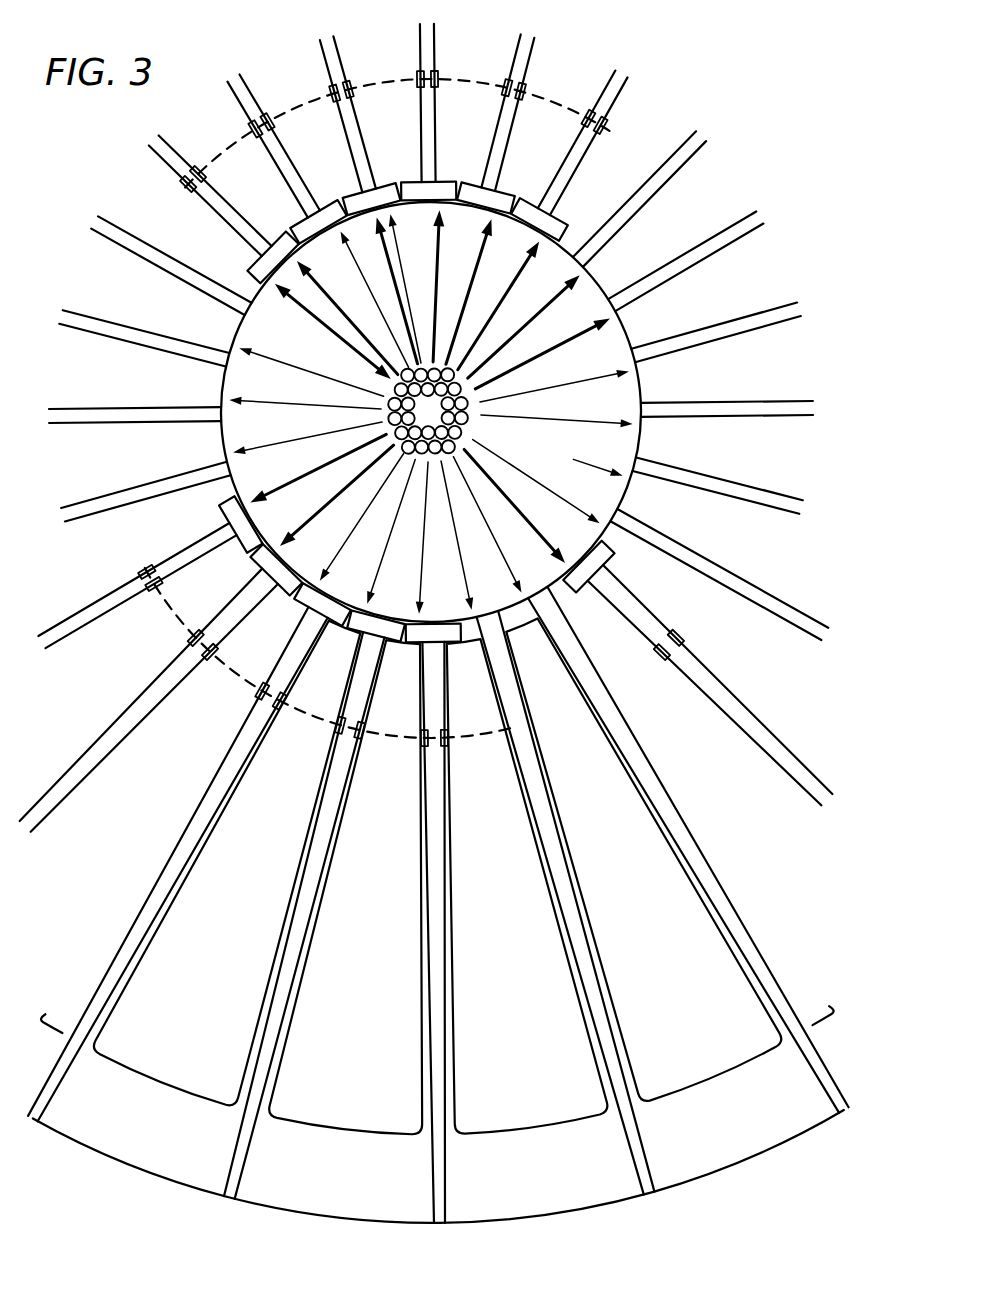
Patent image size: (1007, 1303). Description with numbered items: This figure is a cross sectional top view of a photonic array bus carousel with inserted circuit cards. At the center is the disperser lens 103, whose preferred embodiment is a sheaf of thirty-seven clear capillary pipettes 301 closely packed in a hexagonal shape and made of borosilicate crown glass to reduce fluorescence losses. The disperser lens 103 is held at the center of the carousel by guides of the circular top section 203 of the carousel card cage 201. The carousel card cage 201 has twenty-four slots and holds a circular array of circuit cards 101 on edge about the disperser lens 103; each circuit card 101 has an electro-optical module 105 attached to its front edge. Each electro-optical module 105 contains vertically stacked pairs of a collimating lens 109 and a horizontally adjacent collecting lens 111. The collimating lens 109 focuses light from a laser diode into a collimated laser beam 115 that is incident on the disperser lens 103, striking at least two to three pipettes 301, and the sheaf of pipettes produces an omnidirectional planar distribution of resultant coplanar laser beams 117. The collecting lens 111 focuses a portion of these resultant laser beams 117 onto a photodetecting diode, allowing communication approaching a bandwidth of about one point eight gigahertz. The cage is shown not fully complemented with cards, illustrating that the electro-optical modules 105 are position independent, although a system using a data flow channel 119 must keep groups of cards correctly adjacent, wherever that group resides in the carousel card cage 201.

The circuit card 101 is at (259, 219).
The disperser lens 103 is at (411, 420).
The electro-optical module 105 is at (342, 188).
The collimating lens 109 is at (270, 285).
The collecting lens 111 is at (380, 222).
The collimated laser beam 115 is at (312, 312).
The resultant coplanar laser beams 117 is at (470, 294).
The data flow channel 119 is at (207, 146).
The carousel card cage 201 is at (779, 1160).
The circular top section 203 is at (162, 153).
The capillary pipettes 301 is at (460, 446).